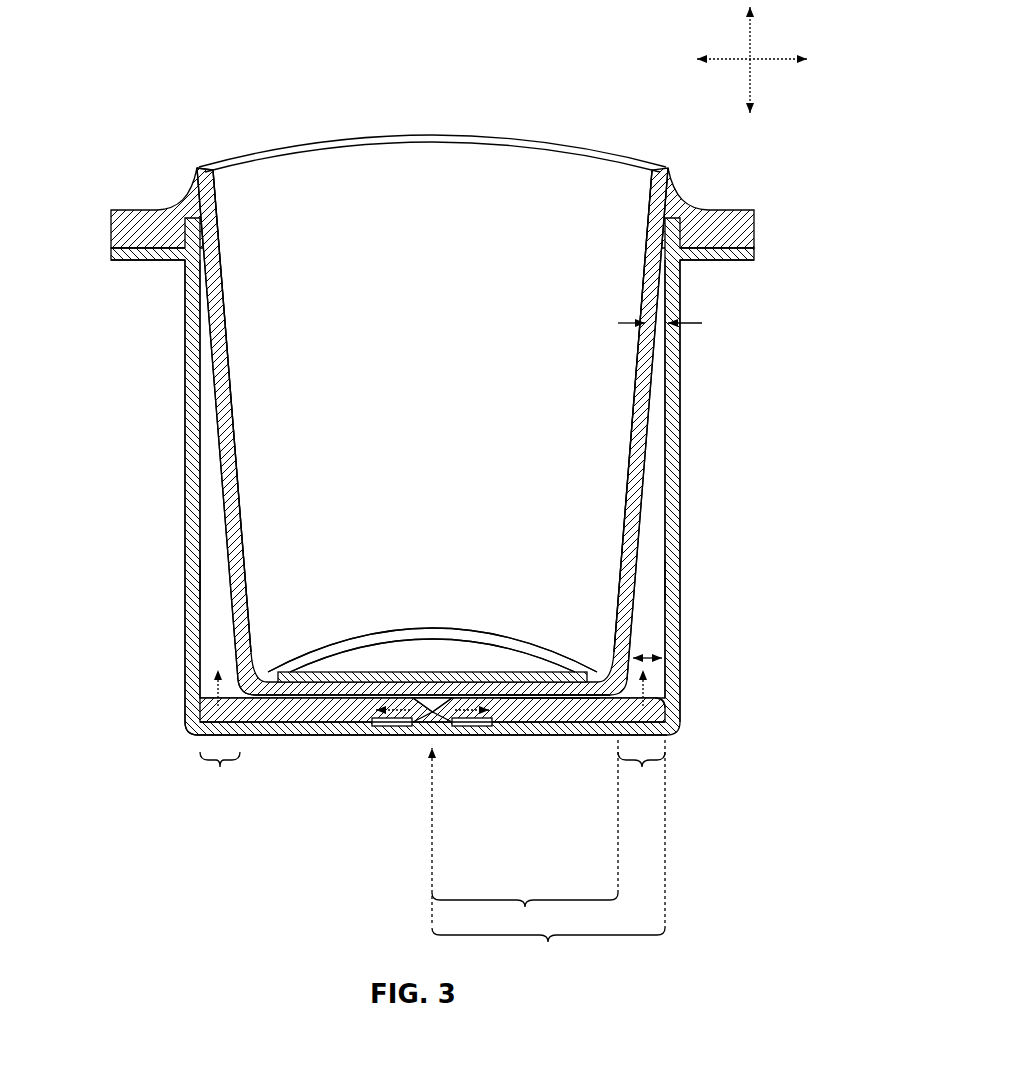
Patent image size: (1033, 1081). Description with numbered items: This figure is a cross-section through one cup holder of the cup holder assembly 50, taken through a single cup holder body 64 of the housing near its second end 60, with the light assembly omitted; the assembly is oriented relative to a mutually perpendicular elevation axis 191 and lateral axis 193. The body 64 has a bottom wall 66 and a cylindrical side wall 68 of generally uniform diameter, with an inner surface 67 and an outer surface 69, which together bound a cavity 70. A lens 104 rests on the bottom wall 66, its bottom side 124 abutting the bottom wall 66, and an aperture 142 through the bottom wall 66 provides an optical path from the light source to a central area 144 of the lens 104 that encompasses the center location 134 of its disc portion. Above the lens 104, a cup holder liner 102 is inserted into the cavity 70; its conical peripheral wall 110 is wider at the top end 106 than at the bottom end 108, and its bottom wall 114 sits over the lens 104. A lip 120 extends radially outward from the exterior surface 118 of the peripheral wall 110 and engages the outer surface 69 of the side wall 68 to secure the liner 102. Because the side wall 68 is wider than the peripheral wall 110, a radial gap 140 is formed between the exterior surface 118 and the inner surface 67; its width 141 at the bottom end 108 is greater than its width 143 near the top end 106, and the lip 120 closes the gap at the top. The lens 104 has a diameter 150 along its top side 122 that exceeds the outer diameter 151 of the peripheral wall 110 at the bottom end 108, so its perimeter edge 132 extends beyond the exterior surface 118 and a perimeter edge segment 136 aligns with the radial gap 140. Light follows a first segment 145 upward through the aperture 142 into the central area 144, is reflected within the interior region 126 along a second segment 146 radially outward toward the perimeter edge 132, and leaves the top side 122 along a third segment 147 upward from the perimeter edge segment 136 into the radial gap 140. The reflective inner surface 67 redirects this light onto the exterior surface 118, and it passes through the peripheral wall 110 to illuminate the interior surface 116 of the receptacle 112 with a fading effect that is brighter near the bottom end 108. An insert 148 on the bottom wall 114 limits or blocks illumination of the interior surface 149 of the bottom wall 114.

The cup holder assembly 50 is at (435, 385).
The second end 60 is at (183, 380).
The cup holder body 64 is at (680, 400).
The bottom wall 66 is at (310, 733).
The inner surface 67 is at (200, 496).
The side wall 68 is at (188, 425).
The outer surface 69 is at (183, 240).
The cavity 70 is at (206, 598).
The cup holder liner 102 is at (264, 150).
The lens 104 is at (338, 713).
The top end 106 is at (211, 166).
The bottom end 108 is at (222, 672).
The peripheral wall 110 is at (226, 455).
The receptacle 112 is at (258, 565).
The bottom wall 114 is at (300, 688).
The interior surface 116 is at (634, 499).
The exterior surface 118 is at (210, 318).
The lip 120 is at (130, 237).
The top side 122 is at (577, 690).
The bottom side 124 is at (553, 703).
The interior region 126 is at (497, 714).
The perimeter edge 132 is at (197, 703).
The center location 134 is at (450, 735).
The perimeter edge segment 136 is at (220, 767).
The radial gap 140 is at (206, 582).
The width 141 is at (645, 655).
The aperture 142 is at (422, 735).
The width 143 is at (702, 323).
The central area 144 is at (462, 724).
The first segment 145 is at (432, 800).
The second segment 146 is at (390, 716).
The third segment 147 is at (262, 698).
The insert 148 is at (352, 682).
The interior surface 149 is at (337, 682).
The diameter 150 is at (548, 942).
The outer diameter 151 is at (525, 907).
The elevation axis 191 is at (750, 72).
The lateral axis 193 is at (785, 57).